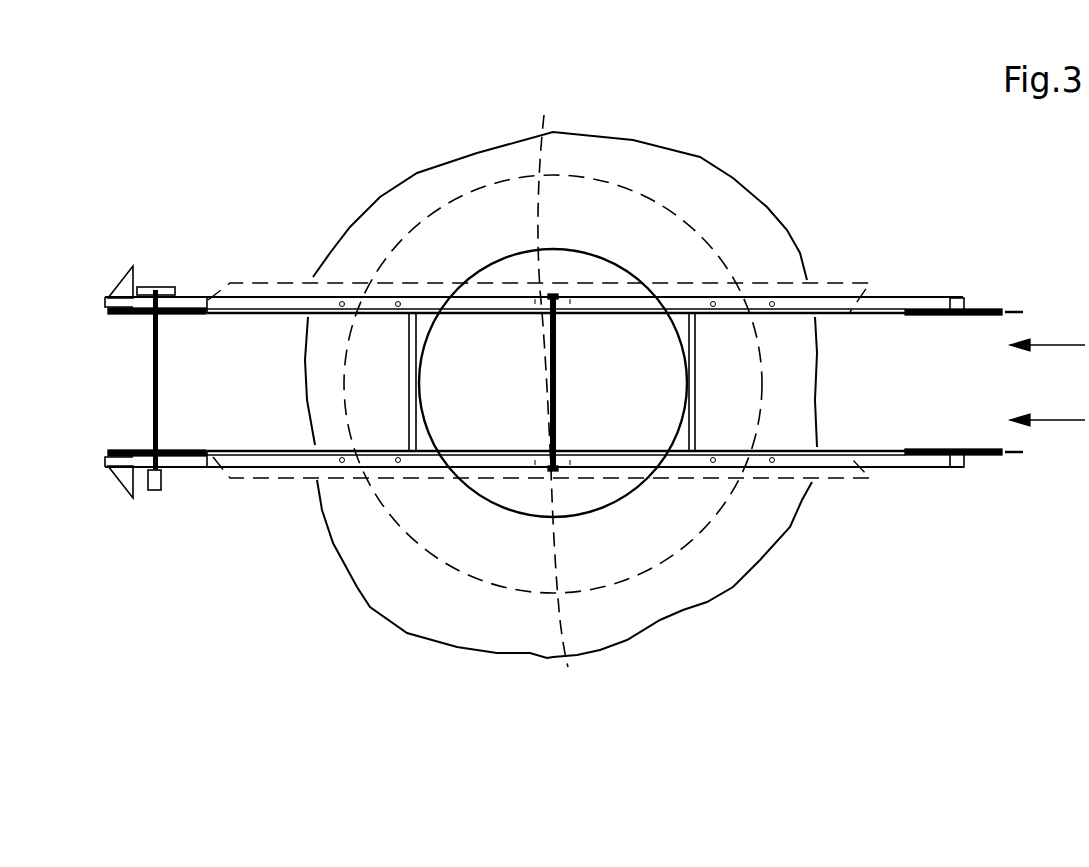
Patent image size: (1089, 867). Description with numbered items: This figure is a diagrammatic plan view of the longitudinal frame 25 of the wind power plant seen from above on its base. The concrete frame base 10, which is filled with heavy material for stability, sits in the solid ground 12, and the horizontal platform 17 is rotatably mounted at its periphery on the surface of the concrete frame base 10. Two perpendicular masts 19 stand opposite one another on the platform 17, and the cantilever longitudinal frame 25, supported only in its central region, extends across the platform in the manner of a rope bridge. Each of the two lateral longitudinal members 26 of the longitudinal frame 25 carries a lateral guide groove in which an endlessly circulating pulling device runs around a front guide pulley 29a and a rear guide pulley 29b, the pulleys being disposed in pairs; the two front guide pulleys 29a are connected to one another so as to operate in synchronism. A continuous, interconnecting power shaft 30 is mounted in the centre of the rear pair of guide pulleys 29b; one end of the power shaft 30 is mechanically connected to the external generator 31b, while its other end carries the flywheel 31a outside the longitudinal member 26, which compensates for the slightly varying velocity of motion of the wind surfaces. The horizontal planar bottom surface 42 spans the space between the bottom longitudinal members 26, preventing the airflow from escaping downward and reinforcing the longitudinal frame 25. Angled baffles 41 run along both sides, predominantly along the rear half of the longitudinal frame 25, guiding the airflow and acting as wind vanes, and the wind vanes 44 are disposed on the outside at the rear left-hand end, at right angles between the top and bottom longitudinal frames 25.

The concrete frame base 10 is at (434, 232).
The solid ground 12 is at (722, 194).
The horizontal platform 17 is at (567, 253).
The perpendicular masts 19 is at (557, 395).
The longitudinal frame 25 is at (922, 290).
The longitudinal member 26 is at (886, 300).
The front guide pulley 29a is at (984, 307).
The rear guide pulley 29b is at (107, 310).
The power shaft 30 is at (151, 385).
The flywheel 31a is at (166, 287).
The external generator 31b is at (153, 491).
The angled baffles 41 is at (333, 280).
The bottom surface 42 is at (263, 352).
The wind vanes 44 is at (124, 290).